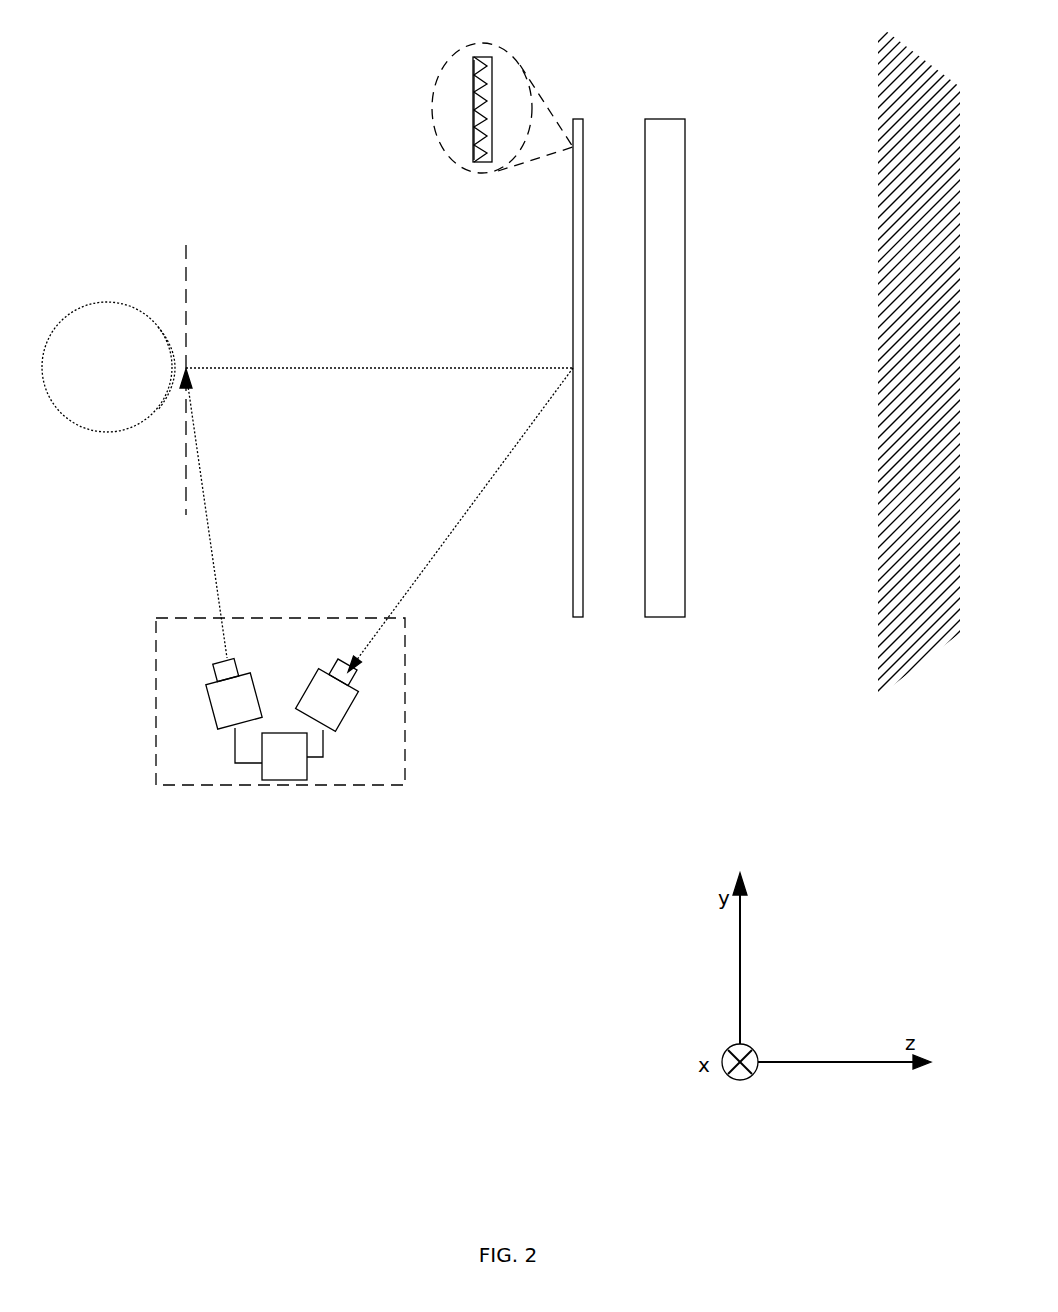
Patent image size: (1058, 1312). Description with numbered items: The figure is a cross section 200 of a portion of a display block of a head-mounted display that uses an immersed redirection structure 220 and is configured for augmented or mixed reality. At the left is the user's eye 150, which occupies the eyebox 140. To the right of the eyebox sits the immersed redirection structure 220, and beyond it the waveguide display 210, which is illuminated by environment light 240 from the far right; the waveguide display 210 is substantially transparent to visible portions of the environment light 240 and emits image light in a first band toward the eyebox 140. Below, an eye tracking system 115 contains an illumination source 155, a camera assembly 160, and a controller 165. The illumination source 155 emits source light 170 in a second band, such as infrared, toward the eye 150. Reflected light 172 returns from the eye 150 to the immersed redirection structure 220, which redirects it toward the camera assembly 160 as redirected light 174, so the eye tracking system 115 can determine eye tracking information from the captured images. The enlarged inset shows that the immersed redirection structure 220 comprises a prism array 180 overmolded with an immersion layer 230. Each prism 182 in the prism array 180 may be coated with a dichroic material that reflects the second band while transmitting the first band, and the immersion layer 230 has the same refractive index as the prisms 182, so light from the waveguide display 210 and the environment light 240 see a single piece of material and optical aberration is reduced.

The cross section 200 is at (46, 78).
The eyebox 140 is at (187, 295).
The eye 150 is at (62, 412).
The source light 170 is at (210, 553).
The reflected light 172 is at (415, 369).
The redirected light 174 is at (422, 568).
The eye tracking system 115 is at (405, 775).
The illumination source 155 is at (215, 717).
The camera assembly 160 is at (325, 705).
The controller 165 is at (285, 763).
The immersed redirection structure 220 is at (578, 617).
The waveguide display 210 is at (685, 213).
The prism array 180 is at (446, 171).
The prism 182 is at (473, 148).
The immersion layer 230 is at (473, 132).
The environment light 240 is at (920, 667).